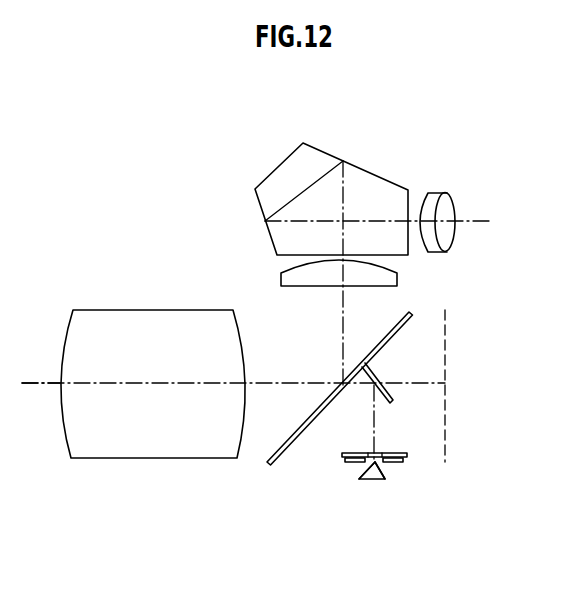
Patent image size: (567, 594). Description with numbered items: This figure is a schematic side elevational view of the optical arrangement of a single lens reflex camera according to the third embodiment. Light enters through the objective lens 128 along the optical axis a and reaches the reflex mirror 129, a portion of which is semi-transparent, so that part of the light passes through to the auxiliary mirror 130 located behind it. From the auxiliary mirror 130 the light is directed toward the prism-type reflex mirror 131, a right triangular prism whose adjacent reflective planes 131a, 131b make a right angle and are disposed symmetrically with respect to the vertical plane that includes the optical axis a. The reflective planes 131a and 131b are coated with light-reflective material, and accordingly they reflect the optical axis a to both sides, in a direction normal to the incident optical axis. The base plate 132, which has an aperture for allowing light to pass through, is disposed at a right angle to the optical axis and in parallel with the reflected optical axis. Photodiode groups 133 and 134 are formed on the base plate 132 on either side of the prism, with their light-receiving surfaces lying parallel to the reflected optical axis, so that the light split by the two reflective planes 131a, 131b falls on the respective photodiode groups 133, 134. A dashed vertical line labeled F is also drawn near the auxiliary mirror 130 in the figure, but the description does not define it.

The objective lens 128 is at (92, 309).
The reflex mirror 129 is at (270, 464).
The auxiliary mirror 130 is at (390, 403).
The reflex mirror 131 is at (382, 467).
The reflective plane 131a is at (358, 463).
The reflective plane 131b is at (377, 463).
The base plate 132 is at (405, 455).
The photodiode group 133 is at (347, 458).
The photodiode group 134 is at (400, 462).
The optical axis a is at (32, 383).
The focal plane F is at (445, 310).